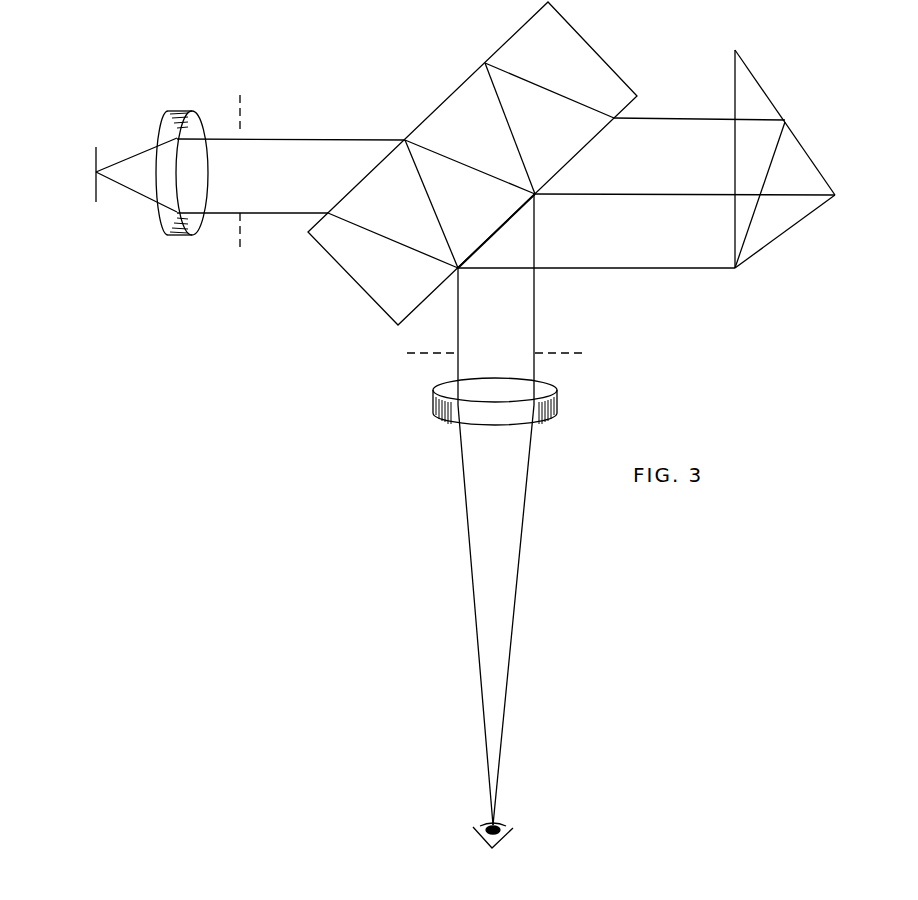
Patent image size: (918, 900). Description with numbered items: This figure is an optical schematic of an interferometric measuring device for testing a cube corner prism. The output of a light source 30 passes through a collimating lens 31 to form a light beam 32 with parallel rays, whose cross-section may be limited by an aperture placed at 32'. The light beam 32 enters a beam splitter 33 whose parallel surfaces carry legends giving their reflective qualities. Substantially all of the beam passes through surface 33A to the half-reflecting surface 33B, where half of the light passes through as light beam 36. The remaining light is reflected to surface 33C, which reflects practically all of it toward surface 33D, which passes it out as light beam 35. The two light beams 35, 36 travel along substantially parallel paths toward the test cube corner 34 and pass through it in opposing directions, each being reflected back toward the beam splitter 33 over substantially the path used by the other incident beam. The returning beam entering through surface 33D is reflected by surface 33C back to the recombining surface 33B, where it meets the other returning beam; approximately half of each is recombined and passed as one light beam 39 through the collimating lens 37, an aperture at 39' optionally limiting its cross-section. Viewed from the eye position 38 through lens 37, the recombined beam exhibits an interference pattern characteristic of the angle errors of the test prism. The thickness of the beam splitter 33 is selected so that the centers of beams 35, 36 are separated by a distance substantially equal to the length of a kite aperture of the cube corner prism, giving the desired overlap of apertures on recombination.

The light source 30 is at (102, 186).
The collimating lens 31 is at (186, 235).
The light beam 32 is at (291, 122).
The aperture 32' is at (252, 173).
The beam splitter 33 is at (353, 287).
The surface 33A is at (380, 172).
The surface 33B is at (521, 215).
The surface 33C is at (467, 72).
The surface 33D is at (578, 157).
The test cube corner 34 is at (792, 134).
The light beam 35 is at (687, 115).
The light beam 36 is at (643, 275).
The collimating lens 37 is at (557, 409).
The eye position 38 is at (508, 838).
The light beam 39 is at (517, 509).
The aperture 39' is at (488, 367).